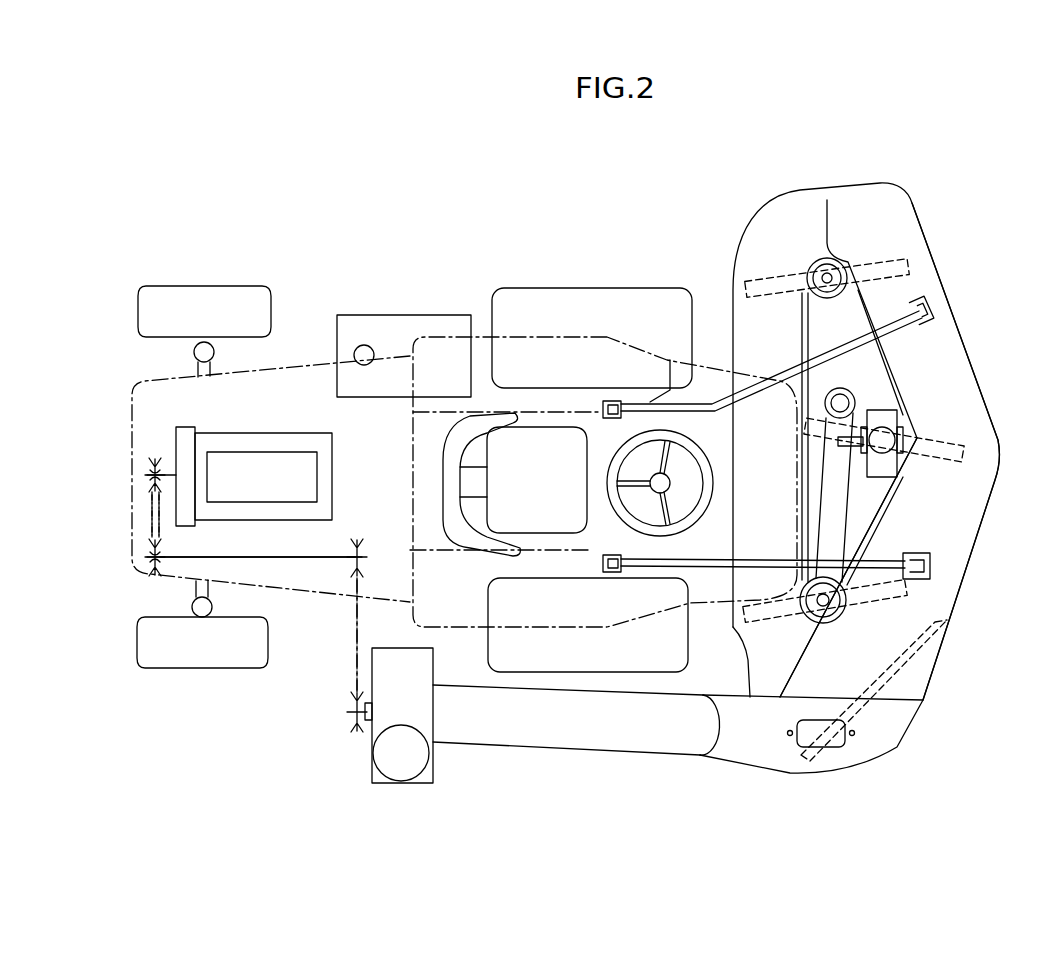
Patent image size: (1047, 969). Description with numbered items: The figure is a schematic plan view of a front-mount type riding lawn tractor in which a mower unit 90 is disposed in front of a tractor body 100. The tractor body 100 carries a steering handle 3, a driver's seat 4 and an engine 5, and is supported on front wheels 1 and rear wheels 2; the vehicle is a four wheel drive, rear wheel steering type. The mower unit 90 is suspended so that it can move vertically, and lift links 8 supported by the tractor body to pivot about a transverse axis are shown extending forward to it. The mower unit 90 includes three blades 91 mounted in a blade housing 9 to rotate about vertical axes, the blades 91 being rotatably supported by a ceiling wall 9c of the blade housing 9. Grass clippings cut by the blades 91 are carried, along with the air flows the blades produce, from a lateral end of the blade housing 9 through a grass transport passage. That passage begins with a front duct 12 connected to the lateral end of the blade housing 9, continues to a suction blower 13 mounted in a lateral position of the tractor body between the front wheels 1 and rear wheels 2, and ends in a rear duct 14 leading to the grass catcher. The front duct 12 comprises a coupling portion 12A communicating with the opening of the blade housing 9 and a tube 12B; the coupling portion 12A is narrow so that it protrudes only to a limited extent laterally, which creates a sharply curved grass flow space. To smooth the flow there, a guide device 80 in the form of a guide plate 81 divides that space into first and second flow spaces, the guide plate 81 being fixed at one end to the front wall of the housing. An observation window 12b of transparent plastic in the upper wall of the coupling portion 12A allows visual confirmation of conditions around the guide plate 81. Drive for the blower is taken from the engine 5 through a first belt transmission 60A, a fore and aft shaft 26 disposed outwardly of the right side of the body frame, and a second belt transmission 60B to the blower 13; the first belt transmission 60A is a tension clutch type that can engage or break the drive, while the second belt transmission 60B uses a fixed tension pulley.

The front wheels 1 is at (581, 290).
The rear wheels 2 is at (203, 286).
The steering handle 3 is at (710, 470).
The driver's seat 4 is at (533, 530).
The engine 5 is at (247, 433).
The lift links 8 is at (782, 380).
The blade housing 9 is at (978, 537).
The ceiling wall 9c is at (950, 573).
The front duct 12 is at (678, 766).
The coupling portion 12A is at (743, 758).
The tube 12B is at (662, 740).
The observation window 12b is at (837, 750).
The suction blower 13 is at (435, 775).
The rear duct 14 is at (383, 782).
The fore and aft shaft 26 is at (320, 558).
The first belt transmission 60A is at (145, 505).
The second belt transmission 60B is at (352, 667).
The guide device 80 is at (908, 695).
The guide plate 81 is at (873, 708).
The mower unit 90 is at (955, 289).
The blades 91 is at (893, 258).
The tractor body 100 is at (432, 284).